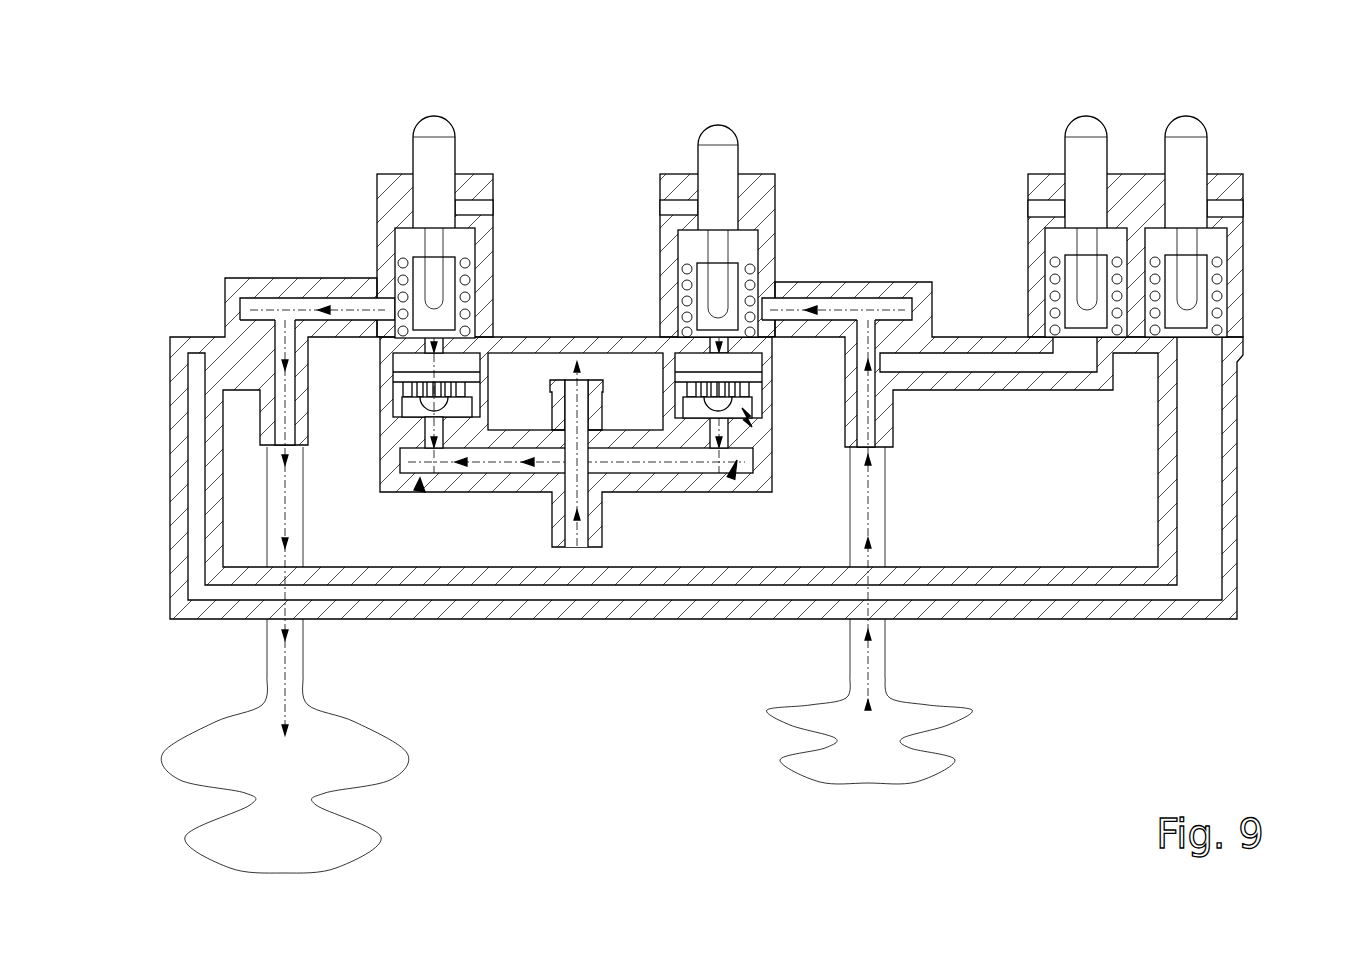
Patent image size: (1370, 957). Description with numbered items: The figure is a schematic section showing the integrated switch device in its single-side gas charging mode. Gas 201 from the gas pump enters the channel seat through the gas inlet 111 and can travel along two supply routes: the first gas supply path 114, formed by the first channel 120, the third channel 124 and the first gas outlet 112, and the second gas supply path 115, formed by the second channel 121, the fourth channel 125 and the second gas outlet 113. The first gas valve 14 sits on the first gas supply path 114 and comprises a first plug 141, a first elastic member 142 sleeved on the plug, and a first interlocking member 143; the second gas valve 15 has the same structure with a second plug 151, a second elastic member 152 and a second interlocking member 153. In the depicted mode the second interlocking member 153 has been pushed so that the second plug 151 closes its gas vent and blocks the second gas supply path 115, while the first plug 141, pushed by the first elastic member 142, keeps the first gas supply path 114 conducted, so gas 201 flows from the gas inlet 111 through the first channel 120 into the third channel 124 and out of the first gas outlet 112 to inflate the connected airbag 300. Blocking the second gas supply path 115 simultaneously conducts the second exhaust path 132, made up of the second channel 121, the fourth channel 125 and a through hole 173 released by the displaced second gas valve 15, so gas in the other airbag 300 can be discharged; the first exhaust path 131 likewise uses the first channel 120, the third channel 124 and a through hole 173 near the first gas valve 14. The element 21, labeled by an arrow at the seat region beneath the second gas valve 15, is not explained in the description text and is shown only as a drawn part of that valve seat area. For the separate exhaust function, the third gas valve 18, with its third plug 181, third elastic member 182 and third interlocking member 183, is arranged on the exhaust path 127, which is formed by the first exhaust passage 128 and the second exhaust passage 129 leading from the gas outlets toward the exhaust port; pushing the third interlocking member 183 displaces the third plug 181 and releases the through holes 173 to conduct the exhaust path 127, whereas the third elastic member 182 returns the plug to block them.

The first gas valve 14 is at (403, 106).
The second gas valve 15 is at (745, 106).
The third gas valve 18 is at (1213, 106).
The valve seat 21 is at (748, 418).
The gas inlet 111 is at (583, 580).
The first gas outlet 112 is at (267, 447).
The second gas outlet 113 is at (885, 452).
The first gas supply path 114 is at (420, 484).
The second gas supply path 115 is at (731, 480).
The first channel 120 is at (507, 463).
The second channel 121 is at (647, 463).
The third channel 124 is at (240, 310).
The fourth channel 125 is at (892, 307).
The exhaust path 127 is at (1207, 458).
The first exhaust passage 128 is at (197, 400).
The second exhaust passage 129 is at (988, 355).
The first exhaust path 131 is at (465, 210).
The second exhaust path 132 is at (685, 215).
The first plug 141 is at (392, 220).
The first elastic member 142 is at (395, 295).
The first interlocking member 143 is at (428, 160).
The second plug 151 is at (747, 243).
The second elastic member 152 is at (688, 297).
The second interlocking member 153 is at (735, 162).
The through hole 173 is at (662, 196).
The third plug 181 is at (1230, 235).
The third elastic member 182 is at (1220, 298).
The third interlocking member 183 is at (1203, 163).
The gas 201 is at (283, 518).
The airbag 300 is at (407, 753).